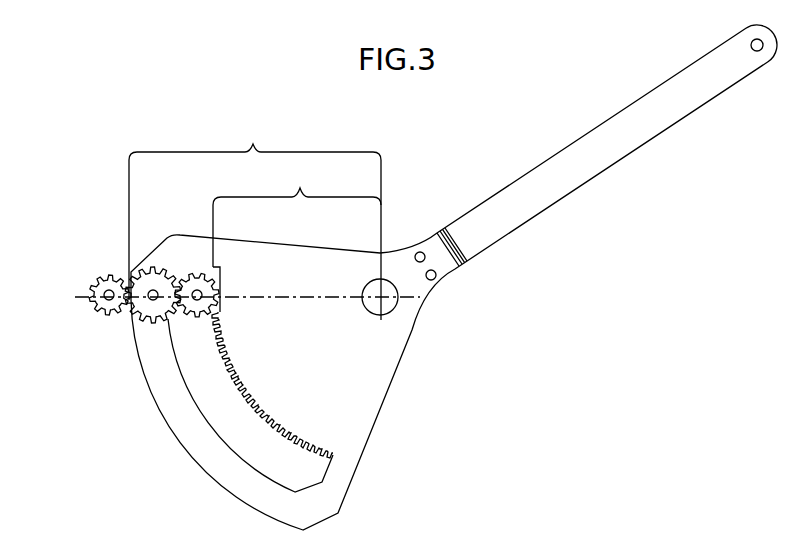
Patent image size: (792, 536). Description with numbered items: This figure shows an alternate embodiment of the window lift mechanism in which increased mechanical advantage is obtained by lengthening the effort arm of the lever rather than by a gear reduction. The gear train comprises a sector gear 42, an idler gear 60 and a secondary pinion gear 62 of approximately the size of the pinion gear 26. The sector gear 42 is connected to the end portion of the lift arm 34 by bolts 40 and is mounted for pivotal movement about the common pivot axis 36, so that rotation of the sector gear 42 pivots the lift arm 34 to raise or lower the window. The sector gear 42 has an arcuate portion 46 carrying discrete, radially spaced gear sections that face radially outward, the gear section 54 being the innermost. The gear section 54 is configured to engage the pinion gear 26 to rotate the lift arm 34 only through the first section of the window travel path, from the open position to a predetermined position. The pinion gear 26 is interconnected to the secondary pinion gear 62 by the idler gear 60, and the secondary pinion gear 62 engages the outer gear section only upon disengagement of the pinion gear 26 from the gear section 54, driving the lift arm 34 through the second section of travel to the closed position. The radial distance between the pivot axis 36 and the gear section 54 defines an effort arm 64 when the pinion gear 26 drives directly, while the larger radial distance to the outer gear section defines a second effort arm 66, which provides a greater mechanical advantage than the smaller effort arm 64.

The pinion gear 26 is at (197, 273).
The lift arm 34 is at (624, 150).
The common pivot axis 36 is at (376, 300).
The bolts 40 is at (420, 262).
The sector gear 42 is at (342, 482).
The arcuate portion 46 is at (202, 445).
The gear section 54 is at (243, 398).
The idler gear 60 is at (150, 313).
The secondary pinion gear 62 is at (103, 275).
The effort arm 64 is at (297, 217).
The second effort arm 66 is at (255, 220).